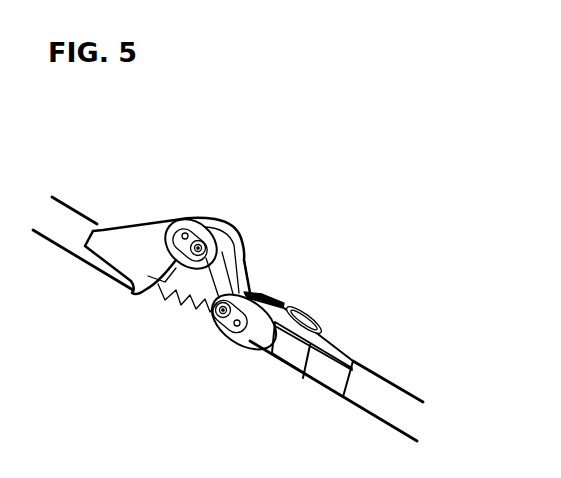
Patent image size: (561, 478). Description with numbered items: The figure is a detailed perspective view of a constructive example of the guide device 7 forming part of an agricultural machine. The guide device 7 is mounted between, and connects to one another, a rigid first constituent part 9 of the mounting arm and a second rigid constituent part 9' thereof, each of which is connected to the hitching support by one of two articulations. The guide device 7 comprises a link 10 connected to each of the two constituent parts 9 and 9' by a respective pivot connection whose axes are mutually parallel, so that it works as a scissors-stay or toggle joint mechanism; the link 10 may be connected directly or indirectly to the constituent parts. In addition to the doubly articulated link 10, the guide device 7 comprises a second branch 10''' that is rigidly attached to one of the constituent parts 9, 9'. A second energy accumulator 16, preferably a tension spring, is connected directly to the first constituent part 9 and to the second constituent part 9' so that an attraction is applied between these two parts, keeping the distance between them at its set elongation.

The guide device 7 is at (123, 355).
The first constituent part 9 is at (93, 188).
The second constituent part 9' is at (338, 356).
The link 10 is at (262, 303).
The second branch 10''' is at (169, 214).
The second energy accumulator 16 is at (182, 308).